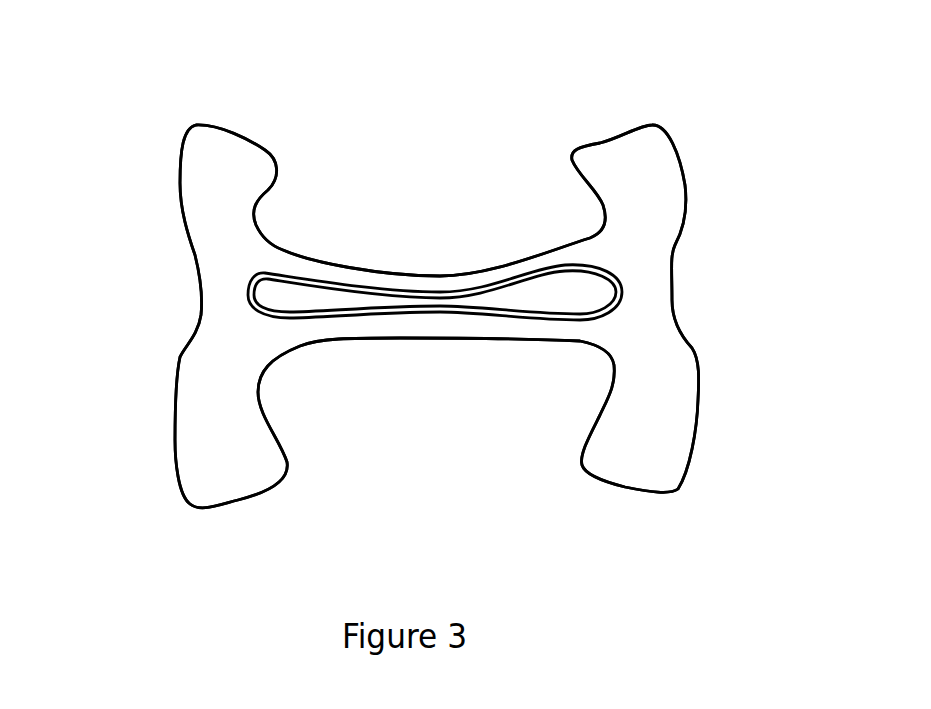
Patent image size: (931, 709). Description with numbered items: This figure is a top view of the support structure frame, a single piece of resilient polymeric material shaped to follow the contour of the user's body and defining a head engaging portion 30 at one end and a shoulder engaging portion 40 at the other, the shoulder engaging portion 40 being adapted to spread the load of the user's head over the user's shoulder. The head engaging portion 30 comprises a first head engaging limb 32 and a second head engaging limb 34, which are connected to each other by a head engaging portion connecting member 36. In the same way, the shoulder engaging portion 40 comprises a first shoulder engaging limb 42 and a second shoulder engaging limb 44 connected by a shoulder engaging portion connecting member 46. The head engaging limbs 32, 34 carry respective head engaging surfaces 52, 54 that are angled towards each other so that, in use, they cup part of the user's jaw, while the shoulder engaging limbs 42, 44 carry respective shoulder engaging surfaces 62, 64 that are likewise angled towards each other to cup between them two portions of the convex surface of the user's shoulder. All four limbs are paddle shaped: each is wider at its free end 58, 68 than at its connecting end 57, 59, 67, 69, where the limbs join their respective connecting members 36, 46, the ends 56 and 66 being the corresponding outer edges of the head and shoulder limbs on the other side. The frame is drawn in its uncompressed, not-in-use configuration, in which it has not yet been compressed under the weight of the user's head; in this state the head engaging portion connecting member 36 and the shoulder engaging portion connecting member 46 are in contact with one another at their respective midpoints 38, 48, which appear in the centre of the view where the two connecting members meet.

The head engaging portion 30 is at (473, 188).
The first head engaging limb 32 is at (647, 152).
The second head engaging limb 34 is at (263, 168).
The head engaging portion connecting member 36 is at (330, 277).
The midpoint of head engaging portion connecting member 38 is at (425, 297).
The shoulder engaging portion 40 is at (507, 440).
The first shoulder engaging limb 42 is at (667, 468).
The second shoulder engaging limb 44 is at (268, 453).
The shoulder engaging portion connecting member 46 is at (320, 332).
The midpoint of shoulder engaging portion connecting member 48 is at (422, 316).
The head engaging surface 52 is at (652, 197).
The head engaging surface 54 is at (240, 207).
The upper right edge 56 is at (612, 130).
The connecting end 57 is at (647, 255).
The free end 58 is at (217, 127).
The connecting end 59 is at (225, 252).
The shoulder engaging surface 62 is at (663, 455).
The shoulder engaging surface 64 is at (238, 465).
The lower right edge 66 is at (653, 495).
The connecting end 67 is at (653, 347).
The free end 68 is at (238, 500).
The connecting end 69 is at (220, 357).